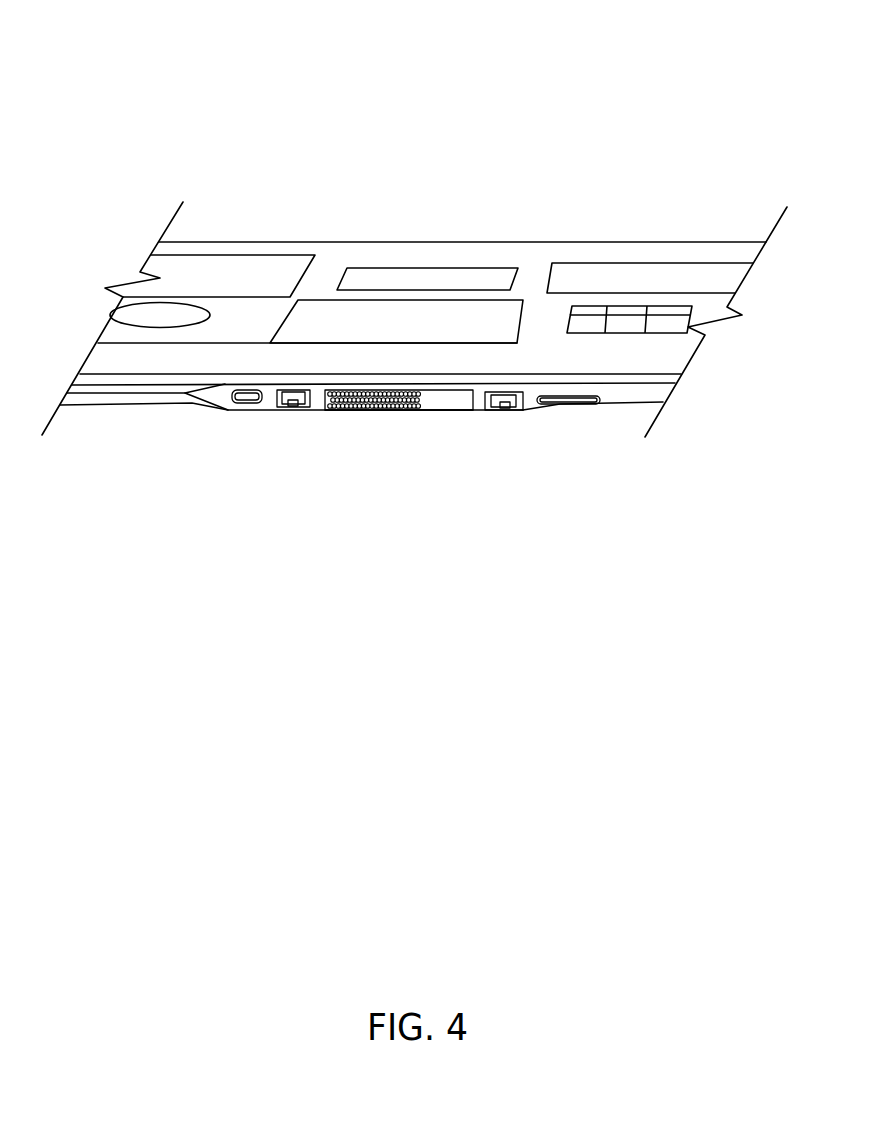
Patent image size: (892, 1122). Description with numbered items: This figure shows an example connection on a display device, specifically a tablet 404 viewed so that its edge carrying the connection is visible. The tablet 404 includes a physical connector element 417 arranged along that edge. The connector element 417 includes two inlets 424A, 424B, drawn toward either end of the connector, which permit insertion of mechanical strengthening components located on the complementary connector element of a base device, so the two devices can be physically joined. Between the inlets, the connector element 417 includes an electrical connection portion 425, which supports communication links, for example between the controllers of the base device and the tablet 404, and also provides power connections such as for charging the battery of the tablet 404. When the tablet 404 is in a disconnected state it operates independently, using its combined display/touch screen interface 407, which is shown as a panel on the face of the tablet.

The display device (tablet) 404 is at (363, 131).
The combined display/touch screen interface 407 is at (387, 276).
The connector element 417 is at (357, 418).
The inlet 424A is at (292, 407).
The inlet 424B is at (510, 411).
The electrical connection portion 425 is at (412, 413).